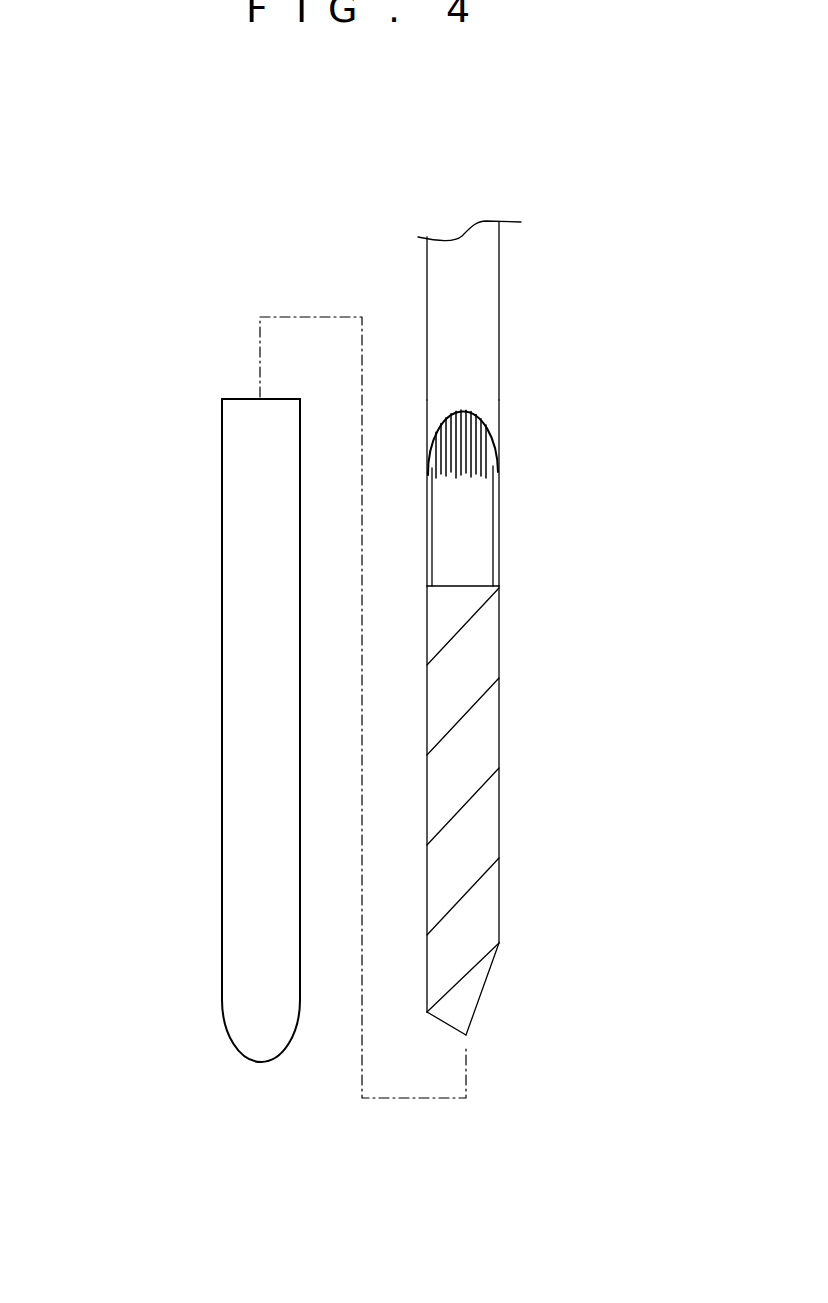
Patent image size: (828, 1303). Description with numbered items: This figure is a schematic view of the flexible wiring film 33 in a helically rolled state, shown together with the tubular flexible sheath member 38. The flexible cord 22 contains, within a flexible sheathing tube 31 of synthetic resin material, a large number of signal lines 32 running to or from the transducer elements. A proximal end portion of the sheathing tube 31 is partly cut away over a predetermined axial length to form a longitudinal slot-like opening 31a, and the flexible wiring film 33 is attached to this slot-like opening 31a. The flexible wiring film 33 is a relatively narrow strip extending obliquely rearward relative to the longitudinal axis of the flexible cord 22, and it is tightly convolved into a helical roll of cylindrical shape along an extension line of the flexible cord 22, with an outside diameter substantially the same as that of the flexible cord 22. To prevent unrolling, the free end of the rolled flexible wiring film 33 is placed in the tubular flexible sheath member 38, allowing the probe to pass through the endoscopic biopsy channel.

The flexible cord 22 is at (488, 272).
The flexible sheathing tube 31 is at (441, 302).
The slot-like opening 31a is at (497, 541).
The signal lines 32 is at (461, 428).
The flexible wiring film 33 is at (490, 733).
The tubular flexible sheath member 38 is at (232, 752).